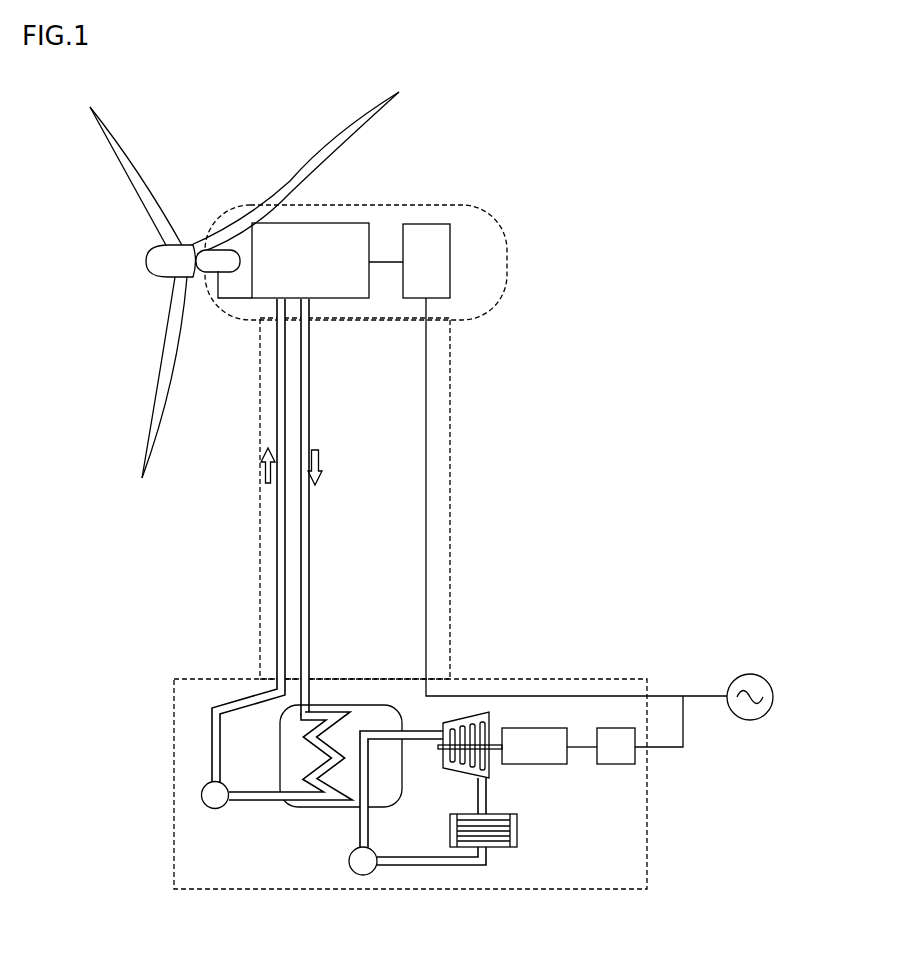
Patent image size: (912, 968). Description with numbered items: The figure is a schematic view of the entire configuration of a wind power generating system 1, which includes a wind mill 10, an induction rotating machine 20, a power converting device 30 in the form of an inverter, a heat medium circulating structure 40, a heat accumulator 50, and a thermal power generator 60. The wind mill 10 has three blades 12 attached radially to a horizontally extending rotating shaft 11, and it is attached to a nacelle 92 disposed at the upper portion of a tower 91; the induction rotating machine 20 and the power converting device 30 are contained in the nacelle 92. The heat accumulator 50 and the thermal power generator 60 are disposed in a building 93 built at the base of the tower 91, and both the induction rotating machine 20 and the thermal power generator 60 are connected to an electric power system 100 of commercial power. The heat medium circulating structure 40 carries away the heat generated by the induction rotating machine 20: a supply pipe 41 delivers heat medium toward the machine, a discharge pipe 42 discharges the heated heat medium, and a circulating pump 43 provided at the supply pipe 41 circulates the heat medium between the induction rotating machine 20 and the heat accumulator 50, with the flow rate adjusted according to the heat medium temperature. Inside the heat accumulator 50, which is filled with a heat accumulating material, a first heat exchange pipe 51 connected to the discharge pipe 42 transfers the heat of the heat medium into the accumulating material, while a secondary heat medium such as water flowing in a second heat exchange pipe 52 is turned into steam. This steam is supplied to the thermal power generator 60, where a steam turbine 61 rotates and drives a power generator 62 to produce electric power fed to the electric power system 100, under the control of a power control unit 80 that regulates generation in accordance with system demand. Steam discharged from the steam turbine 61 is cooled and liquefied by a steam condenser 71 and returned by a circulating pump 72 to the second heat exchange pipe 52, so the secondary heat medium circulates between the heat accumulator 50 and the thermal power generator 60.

The wind power generating system 1 is at (656, 206).
The wind mill 10 is at (227, 285).
The rotating shaft 11 is at (204, 277).
The blade 12 is at (163, 393).
The induction rotating machine 20 is at (377, 218).
The power converting device 30 is at (448, 255).
The heat medium circulating structure 40 is at (286, 540).
The supply pipe 41 is at (277, 521).
The discharge pipe 42 is at (309, 521).
The circulating pump 43 is at (202, 801).
The heat accumulator 50 is at (290, 696).
The first heat exchange pipe 51 is at (313, 750).
The second heat exchange pipe 52 is at (380, 735).
The thermal power generator 60 is at (538, 678).
The steam turbine 61 is at (477, 713).
The power generator 62 is at (557, 732).
The steam condenser 71 is at (517, 823).
The circulating pump 72 is at (357, 875).
The power control unit 80 is at (633, 755).
The tower 91 is at (452, 390).
The nacelle 92 is at (483, 208).
The building 93 is at (174, 760).
The electric power system 100 is at (750, 674).